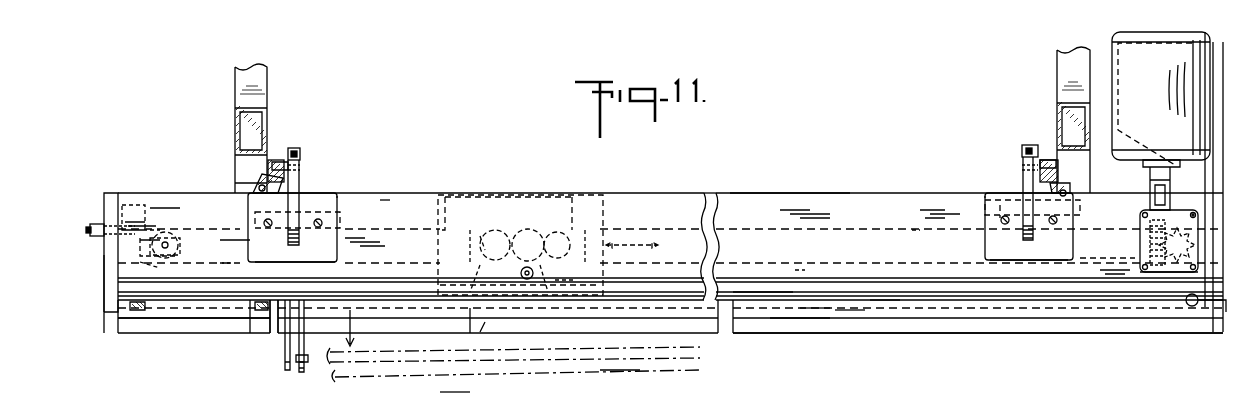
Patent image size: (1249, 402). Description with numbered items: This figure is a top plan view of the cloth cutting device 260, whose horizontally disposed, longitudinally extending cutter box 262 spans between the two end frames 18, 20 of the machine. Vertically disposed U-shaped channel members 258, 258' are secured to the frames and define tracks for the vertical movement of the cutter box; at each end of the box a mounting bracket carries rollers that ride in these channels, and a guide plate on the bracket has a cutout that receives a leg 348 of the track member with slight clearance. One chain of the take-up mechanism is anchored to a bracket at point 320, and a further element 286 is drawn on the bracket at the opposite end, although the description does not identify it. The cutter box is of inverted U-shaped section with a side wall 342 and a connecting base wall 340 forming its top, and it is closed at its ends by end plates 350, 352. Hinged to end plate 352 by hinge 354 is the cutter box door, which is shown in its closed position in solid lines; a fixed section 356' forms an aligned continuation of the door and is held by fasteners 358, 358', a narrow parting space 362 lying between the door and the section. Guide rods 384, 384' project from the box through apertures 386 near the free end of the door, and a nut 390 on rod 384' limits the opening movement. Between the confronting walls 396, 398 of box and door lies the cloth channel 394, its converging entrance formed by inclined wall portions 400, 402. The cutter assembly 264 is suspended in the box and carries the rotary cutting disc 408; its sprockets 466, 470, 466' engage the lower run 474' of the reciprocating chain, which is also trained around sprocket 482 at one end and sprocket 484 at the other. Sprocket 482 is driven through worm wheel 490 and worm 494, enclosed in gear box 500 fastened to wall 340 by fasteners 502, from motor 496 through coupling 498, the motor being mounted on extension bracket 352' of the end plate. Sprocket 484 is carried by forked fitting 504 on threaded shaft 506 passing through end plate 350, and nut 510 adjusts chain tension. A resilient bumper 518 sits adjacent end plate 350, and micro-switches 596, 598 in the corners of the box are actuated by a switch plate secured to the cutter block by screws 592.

The frame 18 is at (235, 117).
The frame 20 is at (1057, 70).
The U-shaped channel member 258 is at (288, 135).
The U-shaped channel member 258' is at (1042, 130).
The cloth cutting device 260 is at (731, 190).
The cutter box 262 is at (765, 200).
The cutter assembly 264 is at (514, 208).
The switch housing 286 is at (296, 150).
The anchor point 320 is at (1035, 146).
The base wall 340 is at (818, 200).
The side wall 342 is at (398, 185).
The leg 348 is at (513, 356).
The end plate 350 is at (112, 262).
The end plate 352 is at (1204, 244).
The extension bracket 352' is at (1147, 86).
The hinge 354 is at (1226, 302).
The fixed door section 356' is at (194, 346).
The fastener 358 is at (252, 332).
The fastener 358' is at (114, 328).
The parting space 362 is at (278, 308).
The guide rod 384 is at (261, 342).
The guide rod 384' is at (316, 349).
The aperture 386 is at (458, 396).
The nut 390 is at (298, 374).
The cloth channel 394 is at (820, 311).
The wall of cutter box 396 is at (843, 302).
The wall of door 398 is at (880, 317).
The inclined wall portion 400 is at (750, 286).
The inclined wall portion 402 is at (800, 326).
The cutting disc 408 is at (471, 326).
The sprocket 466 is at (470, 247).
The sprocket 466' is at (553, 291).
The sprocket 470 is at (482, 280).
The lower run of chain 474' is at (787, 284).
The sprocket 482 is at (1168, 219).
The sprocket 484 is at (176, 234).
The worm wheel 490 is at (1200, 221).
The worm 494 is at (1140, 252).
The motor 496 is at (1168, 50).
The coupling 498 is at (1174, 166).
The gear box 500 is at (1194, 216).
The fastener 502 is at (1196, 272).
The forked fitting 504 is at (190, 240).
The shaft 506 is at (129, 202).
The nut 510 is at (104, 222).
The bumper 518 is at (158, 262).
The screw 592 is at (566, 200).
The micro-switch 596 is at (342, 205).
The micro-switch 598 is at (1000, 200).